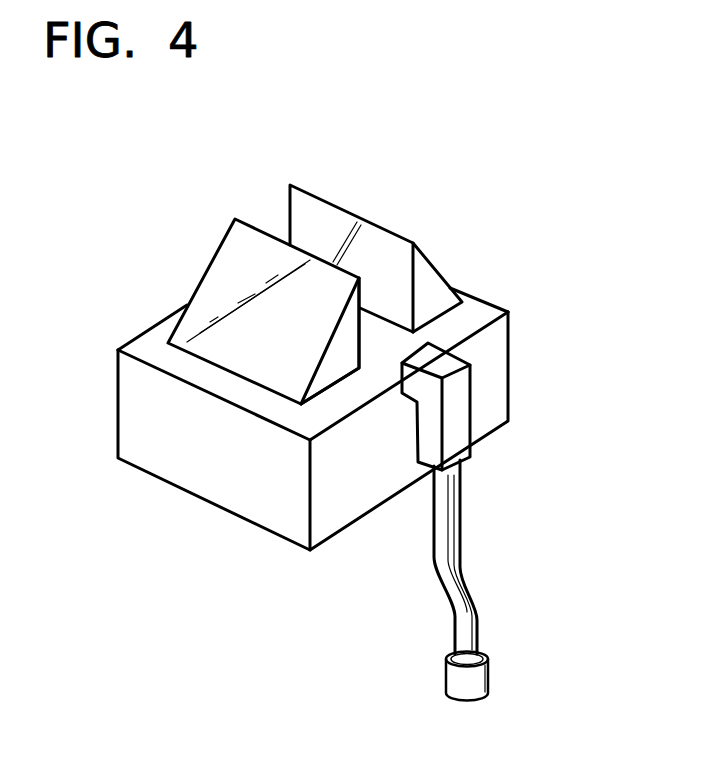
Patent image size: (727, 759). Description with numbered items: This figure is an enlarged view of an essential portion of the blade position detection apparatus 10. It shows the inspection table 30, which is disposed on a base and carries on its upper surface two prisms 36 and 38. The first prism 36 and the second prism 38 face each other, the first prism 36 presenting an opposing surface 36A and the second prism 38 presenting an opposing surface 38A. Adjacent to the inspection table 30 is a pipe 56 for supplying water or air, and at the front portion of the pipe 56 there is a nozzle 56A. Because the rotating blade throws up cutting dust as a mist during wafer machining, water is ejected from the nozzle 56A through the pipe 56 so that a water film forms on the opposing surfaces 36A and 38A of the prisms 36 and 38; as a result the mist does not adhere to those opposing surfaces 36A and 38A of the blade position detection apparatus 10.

The blade position detection apparatus 10 is at (355, 193).
The inspection table 30 is at (137, 438).
The prism 36 is at (217, 284).
The opposing surface 36A is at (360, 332).
The prism 38 is at (432, 278).
The opposing surface 38A is at (387, 253).
The pipe 56 is at (463, 572).
The nozzle 56A is at (436, 360).